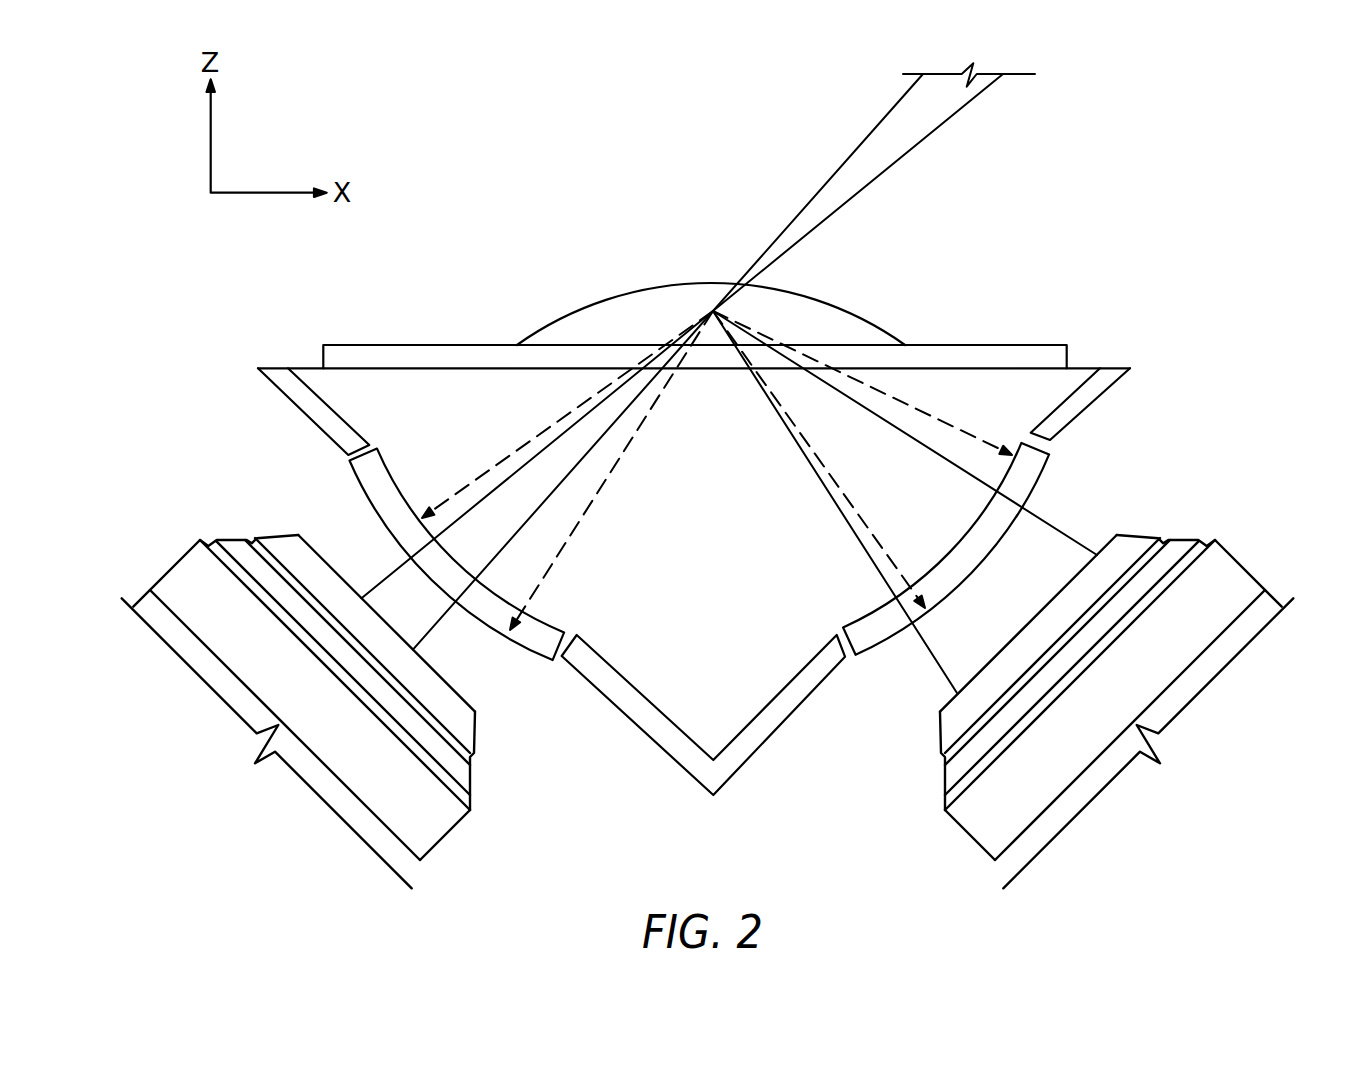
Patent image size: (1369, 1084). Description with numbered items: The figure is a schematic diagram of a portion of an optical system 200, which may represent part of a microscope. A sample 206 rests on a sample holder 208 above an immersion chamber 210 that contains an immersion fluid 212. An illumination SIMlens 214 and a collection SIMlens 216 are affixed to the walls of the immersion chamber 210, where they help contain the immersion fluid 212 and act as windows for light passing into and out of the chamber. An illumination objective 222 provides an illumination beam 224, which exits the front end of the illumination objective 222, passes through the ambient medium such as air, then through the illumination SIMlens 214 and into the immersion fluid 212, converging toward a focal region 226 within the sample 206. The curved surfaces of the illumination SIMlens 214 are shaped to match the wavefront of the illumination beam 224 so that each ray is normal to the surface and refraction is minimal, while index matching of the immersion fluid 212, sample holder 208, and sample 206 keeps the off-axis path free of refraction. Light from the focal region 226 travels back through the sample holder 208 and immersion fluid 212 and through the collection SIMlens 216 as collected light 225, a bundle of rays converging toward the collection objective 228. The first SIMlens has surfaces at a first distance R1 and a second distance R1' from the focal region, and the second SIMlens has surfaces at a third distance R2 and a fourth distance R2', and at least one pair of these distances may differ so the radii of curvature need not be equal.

The optical system 200 is at (1143, 135).
The sample 206 is at (542, 332).
The sample holder 208 is at (938, 345).
The immersion chamber 210 is at (293, 408).
The immersion fluid 212 is at (428, 427).
The illumination SIMlens 214 is at (535, 633).
The collection SIMlens 216 is at (865, 658).
The illumination objective 222 is at (210, 670).
The illumination beam 224 is at (870, 158).
The collected light 225 is at (1058, 552).
The focal region 226 is at (713, 311).
The collection objective 228 is at (1207, 668).
The first distance R1 is at (567, 405).
The second distance R1' is at (611, 525).
The third distance R2 is at (878, 369).
The fourth distance R2' is at (819, 512).